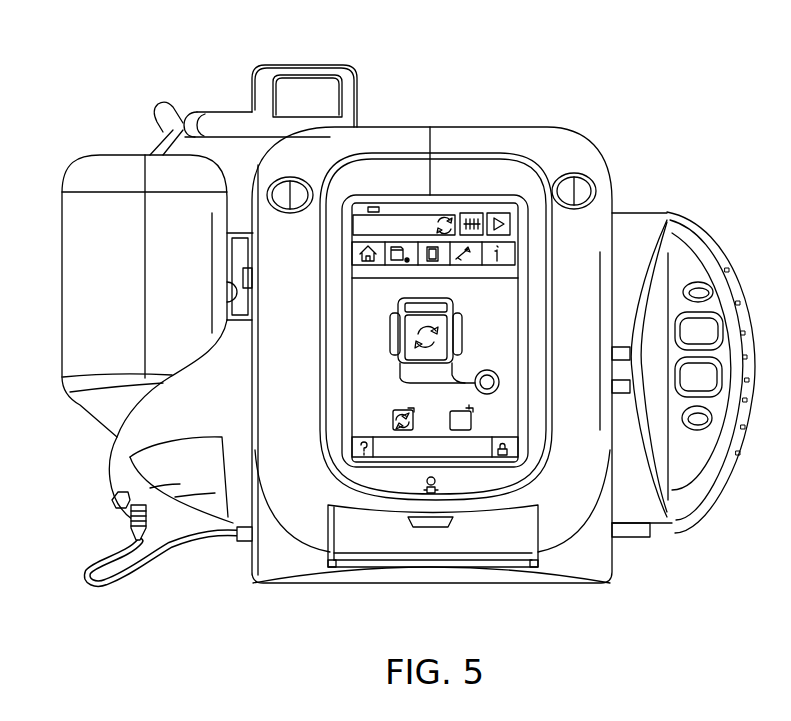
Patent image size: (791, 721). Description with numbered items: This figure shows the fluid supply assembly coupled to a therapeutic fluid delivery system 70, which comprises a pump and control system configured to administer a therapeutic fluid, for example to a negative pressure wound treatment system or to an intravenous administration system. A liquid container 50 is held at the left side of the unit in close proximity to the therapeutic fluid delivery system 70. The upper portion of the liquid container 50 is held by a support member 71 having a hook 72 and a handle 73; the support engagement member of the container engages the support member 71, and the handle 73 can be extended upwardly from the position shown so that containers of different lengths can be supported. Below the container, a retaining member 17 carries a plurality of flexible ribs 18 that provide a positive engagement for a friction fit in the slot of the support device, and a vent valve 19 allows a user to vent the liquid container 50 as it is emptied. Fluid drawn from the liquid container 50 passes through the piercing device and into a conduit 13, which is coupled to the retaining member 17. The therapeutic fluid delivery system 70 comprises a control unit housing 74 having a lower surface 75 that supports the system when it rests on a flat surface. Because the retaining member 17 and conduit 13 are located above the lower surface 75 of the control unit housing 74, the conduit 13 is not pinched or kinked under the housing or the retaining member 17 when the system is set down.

The conduit 13 is at (97, 578).
The retaining member 17 is at (108, 517).
The flexible ribs 18 is at (130, 529).
The vent valve 19 is at (113, 499).
The liquid container 50 is at (62, 290).
The therapeutic fluid delivery system 70 is at (305, 602).
The support member 71 is at (227, 108).
The hook 72 is at (163, 103).
The handle 73 is at (311, 63).
The control unit housing 74 is at (537, 127).
The lower surface 75 is at (542, 585).